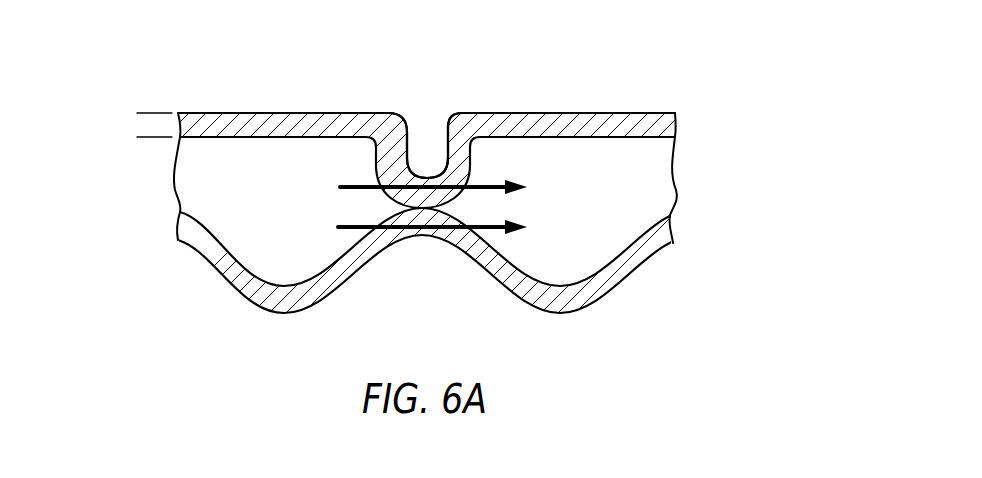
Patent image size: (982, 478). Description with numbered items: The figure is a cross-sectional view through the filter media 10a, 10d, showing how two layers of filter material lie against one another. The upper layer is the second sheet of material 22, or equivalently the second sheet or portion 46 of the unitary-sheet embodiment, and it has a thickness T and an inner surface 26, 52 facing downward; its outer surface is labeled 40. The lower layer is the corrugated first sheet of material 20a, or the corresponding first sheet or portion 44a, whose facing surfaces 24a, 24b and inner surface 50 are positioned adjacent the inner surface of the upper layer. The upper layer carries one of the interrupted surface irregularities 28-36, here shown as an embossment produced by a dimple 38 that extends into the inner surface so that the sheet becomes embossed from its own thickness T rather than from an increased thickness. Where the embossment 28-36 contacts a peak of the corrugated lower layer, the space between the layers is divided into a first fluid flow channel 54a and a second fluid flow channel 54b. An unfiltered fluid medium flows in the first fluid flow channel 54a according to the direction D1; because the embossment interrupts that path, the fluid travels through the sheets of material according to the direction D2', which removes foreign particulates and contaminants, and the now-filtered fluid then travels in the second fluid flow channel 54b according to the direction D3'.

The filter media 10a is at (650, 32).
The filter media 10d is at (592, 58).
The outer surface of first plate 40 is at (415, 143).
The second sheet of material 22 is at (415, 143).
The second sheet or portion 46 is at (415, 143).
The inner surface 26 is at (415, 143).
The inner surface 52 is at (650, 112).
The facing surface 24a is at (484, 257).
The facing surface 24b is at (484, 257).
The inner surface 50 is at (484, 257).
The first sheet of material 20a is at (484, 257).
The first sheet or portion 44a is at (659, 215).
The interrupted surface irregularities 28-36 is at (404, 102).
The dimple 38 is at (408, 100).
The first fluid flow channel 54a is at (270, 217).
The second fluid flow channel 54b is at (604, 220).
The thickness T is at (145, 146).
The flow path direction D1 is at (336, 209).
The flow path direction D2' is at (430, 207).
The flow path direction D3' is at (604, 288).